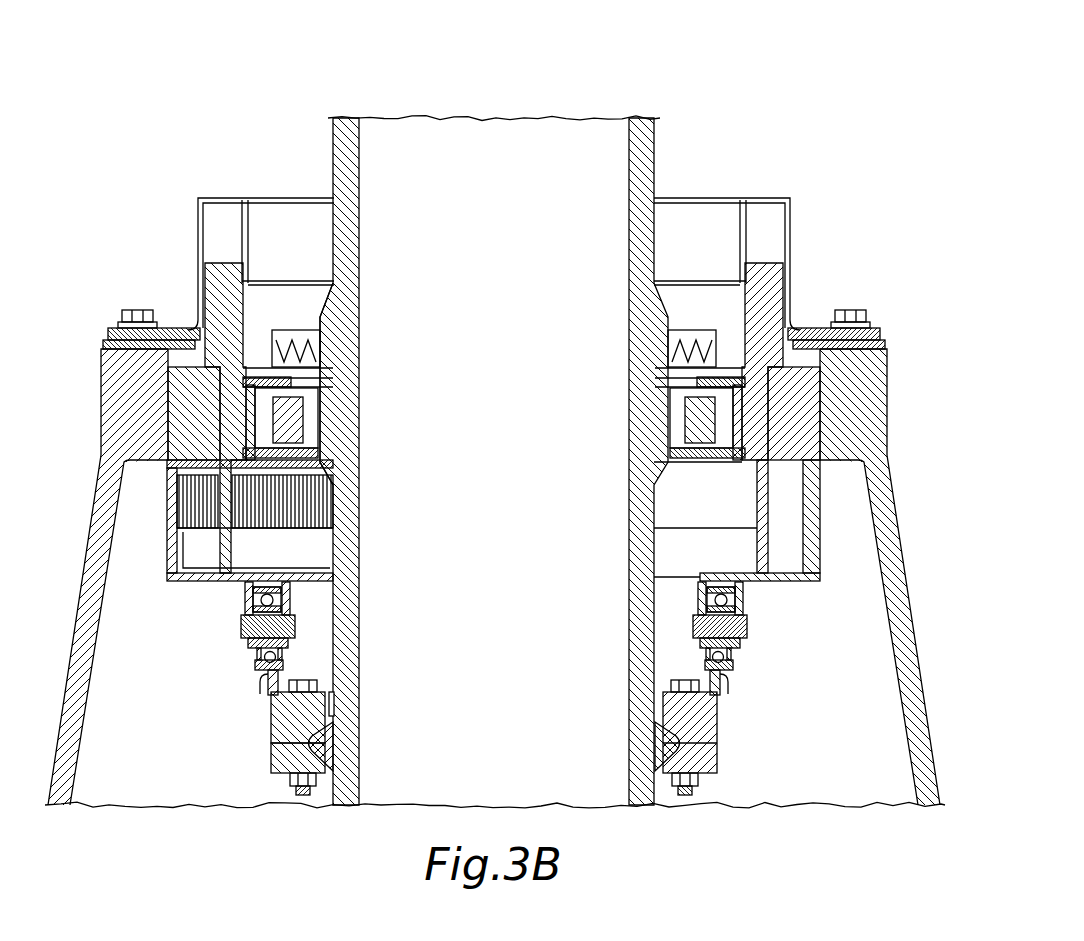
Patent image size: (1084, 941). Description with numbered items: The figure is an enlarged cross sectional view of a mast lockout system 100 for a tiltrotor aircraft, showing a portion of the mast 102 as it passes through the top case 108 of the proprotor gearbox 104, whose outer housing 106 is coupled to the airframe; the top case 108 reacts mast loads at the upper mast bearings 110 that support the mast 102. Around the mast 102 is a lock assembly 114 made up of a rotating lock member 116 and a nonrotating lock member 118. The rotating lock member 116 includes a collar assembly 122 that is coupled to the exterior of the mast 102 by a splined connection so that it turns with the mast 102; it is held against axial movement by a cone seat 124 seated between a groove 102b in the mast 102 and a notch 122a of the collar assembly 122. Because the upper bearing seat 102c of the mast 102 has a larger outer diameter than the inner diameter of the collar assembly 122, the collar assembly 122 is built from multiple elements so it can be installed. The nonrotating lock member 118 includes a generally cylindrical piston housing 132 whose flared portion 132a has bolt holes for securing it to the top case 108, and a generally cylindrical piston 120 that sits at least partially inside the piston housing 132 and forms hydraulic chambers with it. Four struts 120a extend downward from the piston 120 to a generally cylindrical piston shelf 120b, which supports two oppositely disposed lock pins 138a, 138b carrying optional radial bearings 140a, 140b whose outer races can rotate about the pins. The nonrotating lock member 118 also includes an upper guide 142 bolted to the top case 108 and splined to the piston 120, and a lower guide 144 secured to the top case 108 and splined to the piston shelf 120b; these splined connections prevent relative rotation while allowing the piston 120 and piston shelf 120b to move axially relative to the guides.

The mast lockout system 100 is at (704, 84).
The mast 102 is at (628, 137).
The groove 102b is at (331, 712).
The upper bearing seat 102c is at (322, 426).
The proprotor gearbox 104 is at (743, 786).
The outer housing 106 is at (807, 786).
The top case 108 is at (872, 786).
The upper mast bearings 110 is at (717, 425).
The lock assembly 114 is at (756, 639).
The rotating lock member 116 is at (730, 742).
The nonrotating lock member 118 is at (748, 597).
The piston 120 is at (770, 298).
The struts 120a is at (763, 537).
The piston shelf 120b is at (790, 558).
The collar assembly 122 is at (265, 742).
The notch 122a is at (310, 726).
The cone seat 124 is at (335, 768).
The piston housing 132 is at (790, 212).
The flared portion 132a is at (165, 325).
The lock pin 138a is at (243, 627).
The lock pin 138b is at (747, 627).
The radial bearing 140a is at (262, 654).
The radial bearing 140b is at (724, 654).
The upper guide 142 is at (105, 339).
The lower guide 144 is at (180, 505).